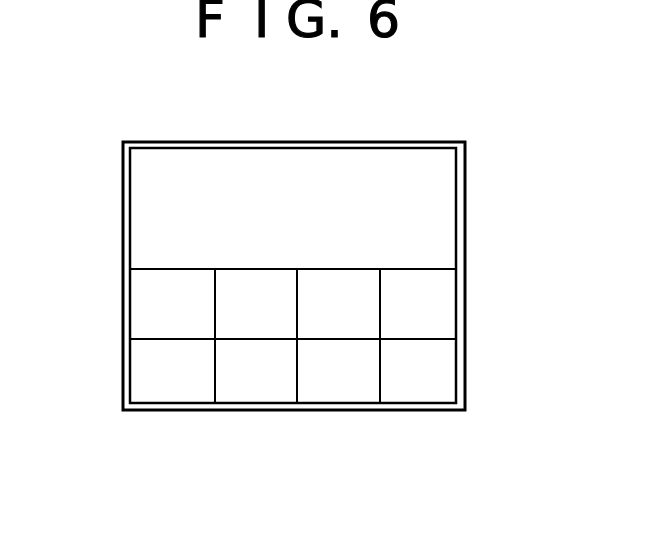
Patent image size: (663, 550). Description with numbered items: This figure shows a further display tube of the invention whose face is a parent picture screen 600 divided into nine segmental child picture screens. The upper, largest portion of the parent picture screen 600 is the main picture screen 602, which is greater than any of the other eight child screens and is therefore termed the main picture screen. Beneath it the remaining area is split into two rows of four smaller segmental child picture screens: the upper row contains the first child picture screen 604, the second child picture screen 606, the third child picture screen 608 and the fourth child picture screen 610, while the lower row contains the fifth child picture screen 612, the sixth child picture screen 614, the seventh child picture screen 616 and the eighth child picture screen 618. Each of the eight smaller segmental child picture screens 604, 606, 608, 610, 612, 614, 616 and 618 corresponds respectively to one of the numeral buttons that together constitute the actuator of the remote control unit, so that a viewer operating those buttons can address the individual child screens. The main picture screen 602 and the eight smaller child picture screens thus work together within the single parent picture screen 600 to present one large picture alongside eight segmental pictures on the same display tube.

The parent picture screen 600 is at (470, 162).
The main picture screen 602 is at (188, 157).
The segmental child picture screen 604 is at (143, 303).
The segmental child picture screen 606 is at (225, 317).
The segmental child picture screen 608 is at (370, 310).
The segmental child picture screen 610 is at (443, 328).
The segmental child picture screen 612 is at (176, 378).
The segmental child picture screen 614 is at (256, 377).
The segmental child picture screen 616 is at (340, 377).
The segmental child picture screen 618 is at (422, 377).